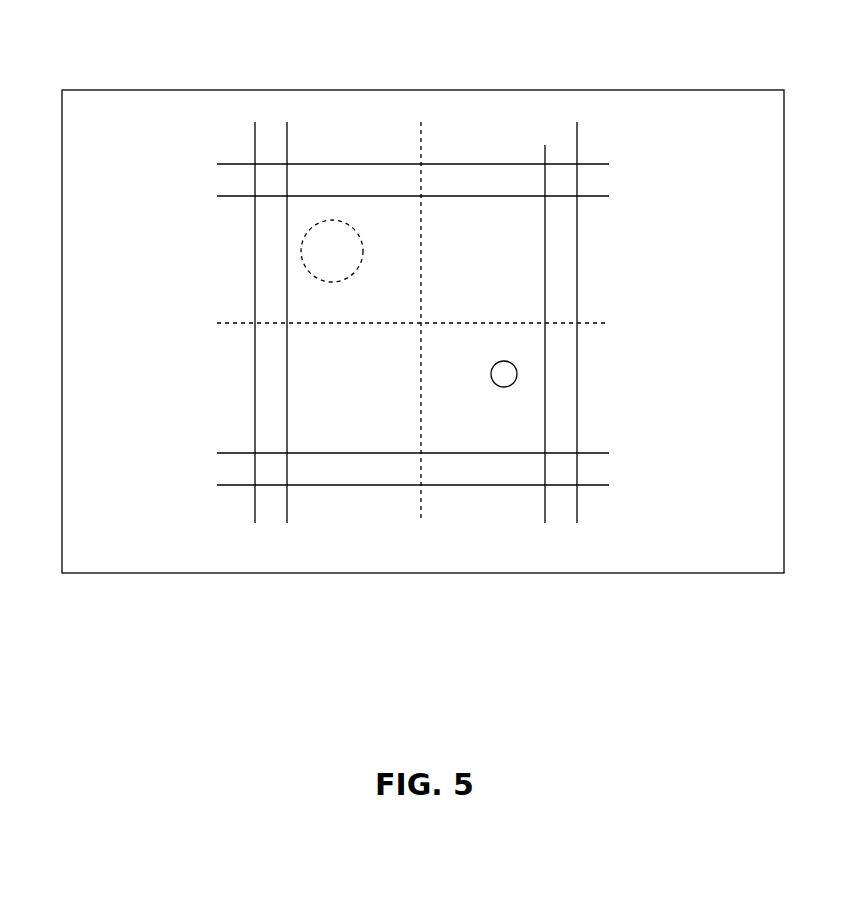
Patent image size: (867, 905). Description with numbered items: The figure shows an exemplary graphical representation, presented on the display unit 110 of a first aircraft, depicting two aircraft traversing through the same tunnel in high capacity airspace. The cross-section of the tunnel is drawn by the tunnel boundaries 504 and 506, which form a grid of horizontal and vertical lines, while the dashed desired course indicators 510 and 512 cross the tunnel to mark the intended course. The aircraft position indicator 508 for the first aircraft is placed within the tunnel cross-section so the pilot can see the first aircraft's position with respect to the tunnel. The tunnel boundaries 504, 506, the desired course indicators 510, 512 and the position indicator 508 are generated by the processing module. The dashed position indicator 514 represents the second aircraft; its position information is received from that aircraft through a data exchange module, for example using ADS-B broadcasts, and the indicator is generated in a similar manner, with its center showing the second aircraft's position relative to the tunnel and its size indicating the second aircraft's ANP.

The display unit 110 is at (168, 90).
The tunnel boundary 504 is at (236, 196).
The tunnel boundary 506 is at (255, 134).
The aircraft position indicator 508 is at (517, 374).
The desired course indicator 510 is at (599, 323).
The desired course indicator 512 is at (422, 143).
The position indicator 514 is at (303, 270).